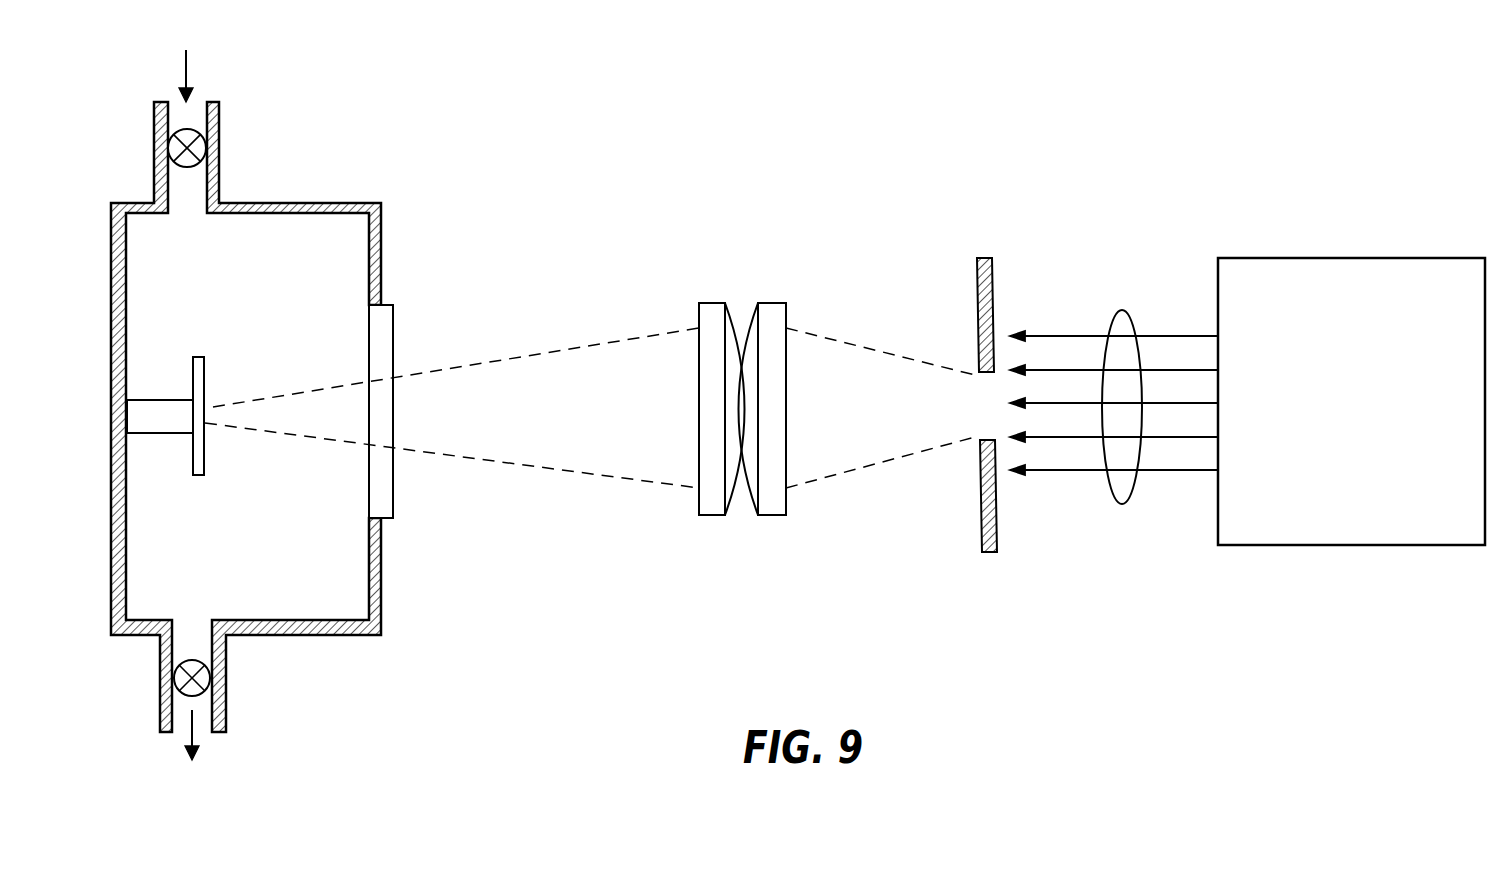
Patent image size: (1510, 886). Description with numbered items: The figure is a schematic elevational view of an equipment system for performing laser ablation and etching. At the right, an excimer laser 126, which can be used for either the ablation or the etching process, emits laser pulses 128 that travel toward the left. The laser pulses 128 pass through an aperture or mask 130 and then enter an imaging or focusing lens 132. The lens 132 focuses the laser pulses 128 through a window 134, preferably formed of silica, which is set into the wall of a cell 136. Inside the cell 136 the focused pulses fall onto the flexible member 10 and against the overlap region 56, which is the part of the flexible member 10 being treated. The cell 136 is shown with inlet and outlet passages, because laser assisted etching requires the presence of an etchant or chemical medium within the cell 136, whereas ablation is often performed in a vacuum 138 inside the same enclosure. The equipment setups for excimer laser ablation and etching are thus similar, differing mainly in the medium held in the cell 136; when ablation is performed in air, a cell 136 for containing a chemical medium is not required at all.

The flexible member 10 is at (232, 384).
The overlap region 56 is at (212, 408).
The excimer laser 126 is at (1352, 545).
The laser pulses 128 is at (1123, 505).
The aperture or mask 130 is at (995, 292).
The imaging or focusing lens 132 is at (770, 318).
The window 134 is at (393, 418).
The cell 136 is at (307, 635).
The vacuum 138 is at (283, 556).